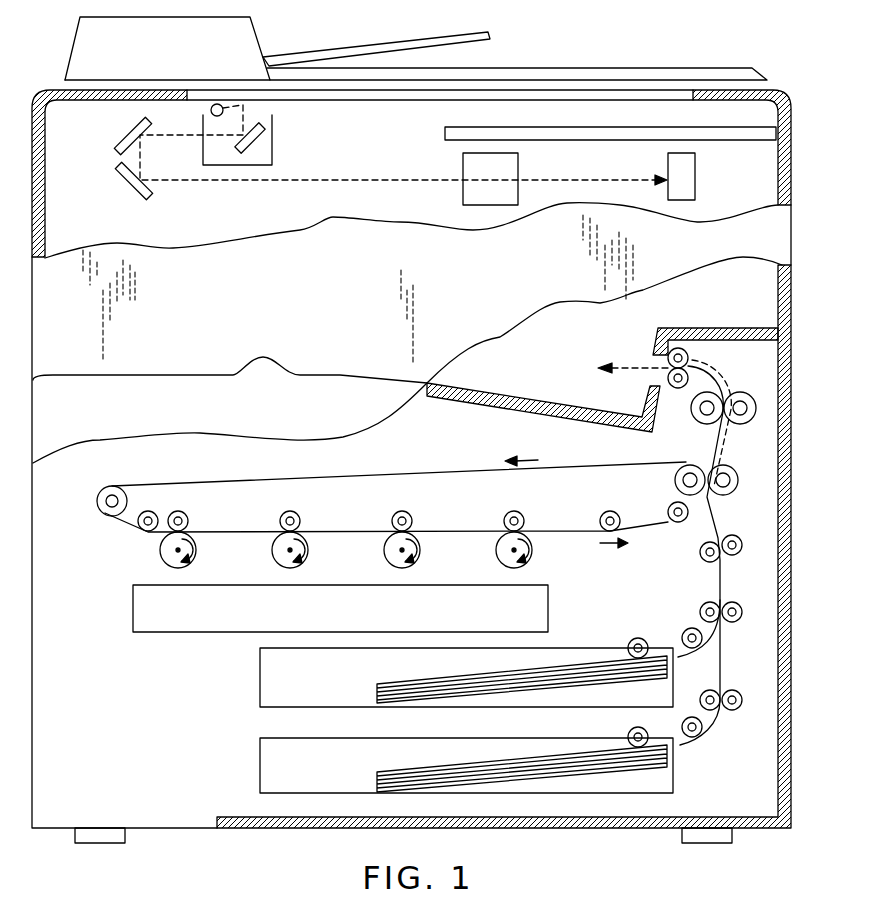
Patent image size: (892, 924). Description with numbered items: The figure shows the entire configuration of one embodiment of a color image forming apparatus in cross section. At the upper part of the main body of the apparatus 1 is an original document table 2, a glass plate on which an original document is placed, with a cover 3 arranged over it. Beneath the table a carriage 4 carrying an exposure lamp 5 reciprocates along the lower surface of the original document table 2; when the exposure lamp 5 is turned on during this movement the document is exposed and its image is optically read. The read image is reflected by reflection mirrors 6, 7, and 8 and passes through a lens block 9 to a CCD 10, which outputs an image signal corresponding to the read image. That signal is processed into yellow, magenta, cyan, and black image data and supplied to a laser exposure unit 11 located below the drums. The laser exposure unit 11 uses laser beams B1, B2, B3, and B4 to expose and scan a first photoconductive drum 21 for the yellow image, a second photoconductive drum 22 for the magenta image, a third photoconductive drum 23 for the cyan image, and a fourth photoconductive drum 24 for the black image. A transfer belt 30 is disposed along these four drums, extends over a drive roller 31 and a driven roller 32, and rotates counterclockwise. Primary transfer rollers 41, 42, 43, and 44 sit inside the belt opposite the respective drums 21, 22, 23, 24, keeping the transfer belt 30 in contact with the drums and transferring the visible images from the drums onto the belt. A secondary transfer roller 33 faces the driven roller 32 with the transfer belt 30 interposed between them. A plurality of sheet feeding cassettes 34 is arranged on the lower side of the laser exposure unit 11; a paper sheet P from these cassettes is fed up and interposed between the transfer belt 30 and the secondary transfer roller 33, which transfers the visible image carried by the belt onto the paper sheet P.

The main body of the apparatus 1 is at (793, 135).
The original document table 2 is at (417, 102).
The cover 3 is at (590, 66).
The carriage 4 is at (274, 118).
The exposure lamp 5 is at (210, 111).
The reflection mirror 6 is at (262, 146).
The reflection mirror 7 is at (124, 133).
The reflection mirror 8 is at (120, 185).
The lens block 9 is at (520, 158).
The CCD 10 is at (697, 168).
The laser exposure unit 11 is at (133, 608).
The first photoconductive drum 21 is at (197, 551).
The second photoconductive drum 22 is at (309, 551).
The third photoconductive drum 23 is at (421, 551).
The fourth photoconductive drum 24 is at (533, 551).
The transfer belt 30 is at (410, 475).
The drive roller 31 is at (97, 500).
The driven roller 32 is at (689, 465).
The secondary transfer roller 33 is at (725, 465).
The sheet feeding cassette 34 is at (260, 685).
The primary transfer roller 41 is at (179, 510).
The primary transfer roller 42 is at (280, 519).
The primary transfer roller 43 is at (392, 517).
The primary transfer roller 44 is at (504, 517).
The laser beam B1 is at (165, 563).
The laser beam B2 is at (277, 563).
The laser beam B3 is at (389, 563).
The laser beam B4 is at (501, 563).
The paper sheet P is at (401, 685).